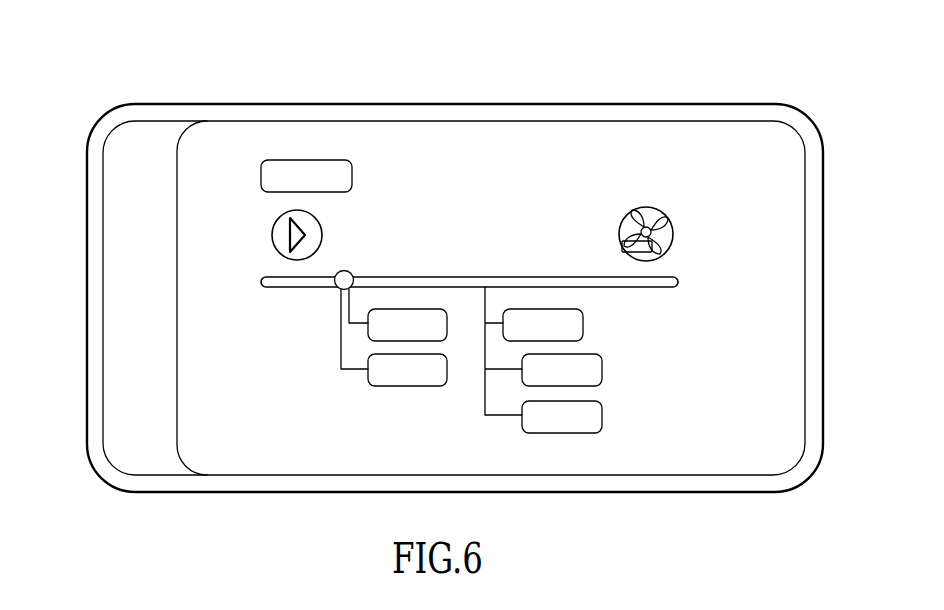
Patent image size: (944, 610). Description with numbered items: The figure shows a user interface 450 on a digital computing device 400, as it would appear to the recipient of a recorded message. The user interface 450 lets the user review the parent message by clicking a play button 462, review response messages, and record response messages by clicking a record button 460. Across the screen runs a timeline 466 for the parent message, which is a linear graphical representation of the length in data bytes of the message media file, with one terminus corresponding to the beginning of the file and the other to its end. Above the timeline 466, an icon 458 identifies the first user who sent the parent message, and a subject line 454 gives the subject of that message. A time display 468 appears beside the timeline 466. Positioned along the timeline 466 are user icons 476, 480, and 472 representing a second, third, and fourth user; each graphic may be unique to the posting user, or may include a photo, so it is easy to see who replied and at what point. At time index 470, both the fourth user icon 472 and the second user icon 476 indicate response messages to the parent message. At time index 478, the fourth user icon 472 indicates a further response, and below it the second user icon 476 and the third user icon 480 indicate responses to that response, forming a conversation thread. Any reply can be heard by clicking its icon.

The digital computing device 400 is at (710, 104).
The user interface 450 is at (698, 200).
The subject line 454 is at (413, 162).
The icon for first user 458 is at (307, 160).
The record button 460 is at (647, 207).
The play button 462 is at (272, 235).
The timeline 466 is at (270, 275).
The elapsed time display 468 is at (740, 265).
The time index 470 is at (337, 287).
The fourth user icon 472 is at (447, 322).
The second user icon 476 is at (412, 386).
The time index 478 is at (487, 285).
The third user icon 480 is at (602, 413).